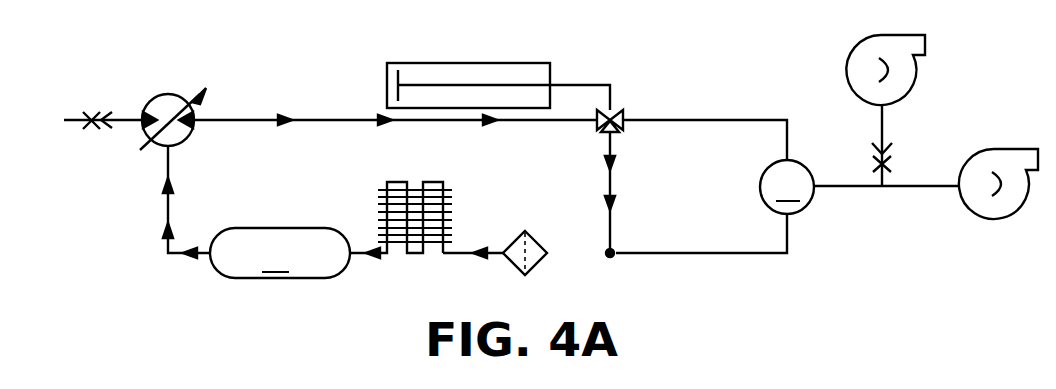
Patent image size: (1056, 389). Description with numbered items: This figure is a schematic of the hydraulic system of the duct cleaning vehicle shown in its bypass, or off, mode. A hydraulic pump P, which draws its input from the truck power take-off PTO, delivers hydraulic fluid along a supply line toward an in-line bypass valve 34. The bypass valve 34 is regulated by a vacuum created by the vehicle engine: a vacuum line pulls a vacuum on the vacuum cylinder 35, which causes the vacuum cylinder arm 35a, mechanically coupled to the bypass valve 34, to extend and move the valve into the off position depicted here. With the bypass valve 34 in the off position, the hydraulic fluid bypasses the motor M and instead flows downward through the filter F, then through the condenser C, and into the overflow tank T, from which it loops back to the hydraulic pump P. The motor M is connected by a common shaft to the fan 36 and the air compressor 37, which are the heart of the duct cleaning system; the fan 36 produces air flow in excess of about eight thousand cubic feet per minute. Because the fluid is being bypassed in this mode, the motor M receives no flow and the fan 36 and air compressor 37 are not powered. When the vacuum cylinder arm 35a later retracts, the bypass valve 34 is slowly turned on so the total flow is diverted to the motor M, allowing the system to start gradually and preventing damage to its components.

The bypass valve 34 is at (620, 128).
The vacuum cylinder 35 is at (387, 64).
The vacuum cylinder arm 35a is at (598, 85).
The fan 36 is at (996, 205).
The air compressor 37 is at (918, 68).
The hydraulic pump P is at (172, 93).
The overflow tank T is at (256, 212).
The condenser C is at (430, 181).
The filter F is at (530, 265).
The hydraulic motor M is at (859, 187).
The truck power take-off PTO is at (93, 111).